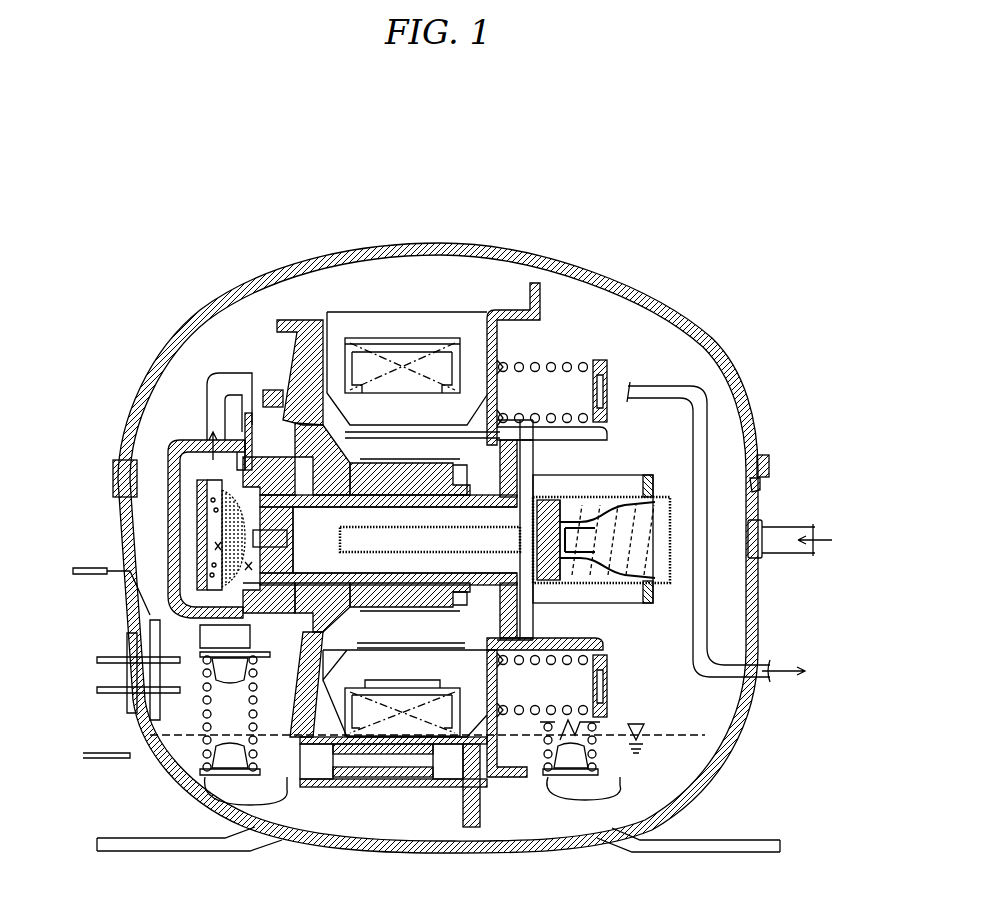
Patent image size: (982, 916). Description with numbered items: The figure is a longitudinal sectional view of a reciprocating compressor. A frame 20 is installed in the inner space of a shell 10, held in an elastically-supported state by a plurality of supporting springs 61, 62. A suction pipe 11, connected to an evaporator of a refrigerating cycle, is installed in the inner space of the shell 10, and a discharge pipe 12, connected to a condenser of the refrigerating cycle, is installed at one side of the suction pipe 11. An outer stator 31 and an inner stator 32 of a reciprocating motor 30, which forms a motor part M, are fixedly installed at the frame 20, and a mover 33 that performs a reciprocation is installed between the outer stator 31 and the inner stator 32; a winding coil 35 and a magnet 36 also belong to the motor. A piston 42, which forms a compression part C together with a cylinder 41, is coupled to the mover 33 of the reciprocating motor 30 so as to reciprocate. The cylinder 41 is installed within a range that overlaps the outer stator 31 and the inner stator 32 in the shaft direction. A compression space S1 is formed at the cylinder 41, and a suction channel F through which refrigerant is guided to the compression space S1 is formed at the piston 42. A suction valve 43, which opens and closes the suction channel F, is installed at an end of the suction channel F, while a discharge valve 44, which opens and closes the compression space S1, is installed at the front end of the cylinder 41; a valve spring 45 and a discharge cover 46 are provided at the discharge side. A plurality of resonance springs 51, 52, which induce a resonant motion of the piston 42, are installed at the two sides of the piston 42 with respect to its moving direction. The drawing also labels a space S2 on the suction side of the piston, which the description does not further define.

The shell 10 is at (700, 325).
The suction pipe 11 is at (783, 545).
The discharge pipe 12 is at (762, 664).
The frame 20 is at (308, 330).
The reciprocating motor 30 is at (411, 455).
The outer stator 31 is at (383, 322).
The inner stator 32 is at (421, 453).
The mover 33 is at (403, 455).
The winding coil 35 is at (345, 365).
The magnet 36 is at (433, 640).
The cylinder 41 is at (247, 440).
The piston 42 is at (255, 480).
The suction valve 43 is at (215, 495).
The discharge valve 44 is at (228, 525).
The valve spring 45 is at (203, 577).
The discharge cover 46 is at (200, 643).
The resonance spring 51 is at (573, 362).
The resonance spring 52 is at (633, 495).
The supporting spring 61 is at (207, 760).
The supporting spring 62 is at (593, 740).
The compression part C is at (273, 450).
The motor part M is at (470, 312).
The suction channel F is at (320, 545).
The compression space S1 is at (207, 613).
The compression space S2 is at (218, 546).